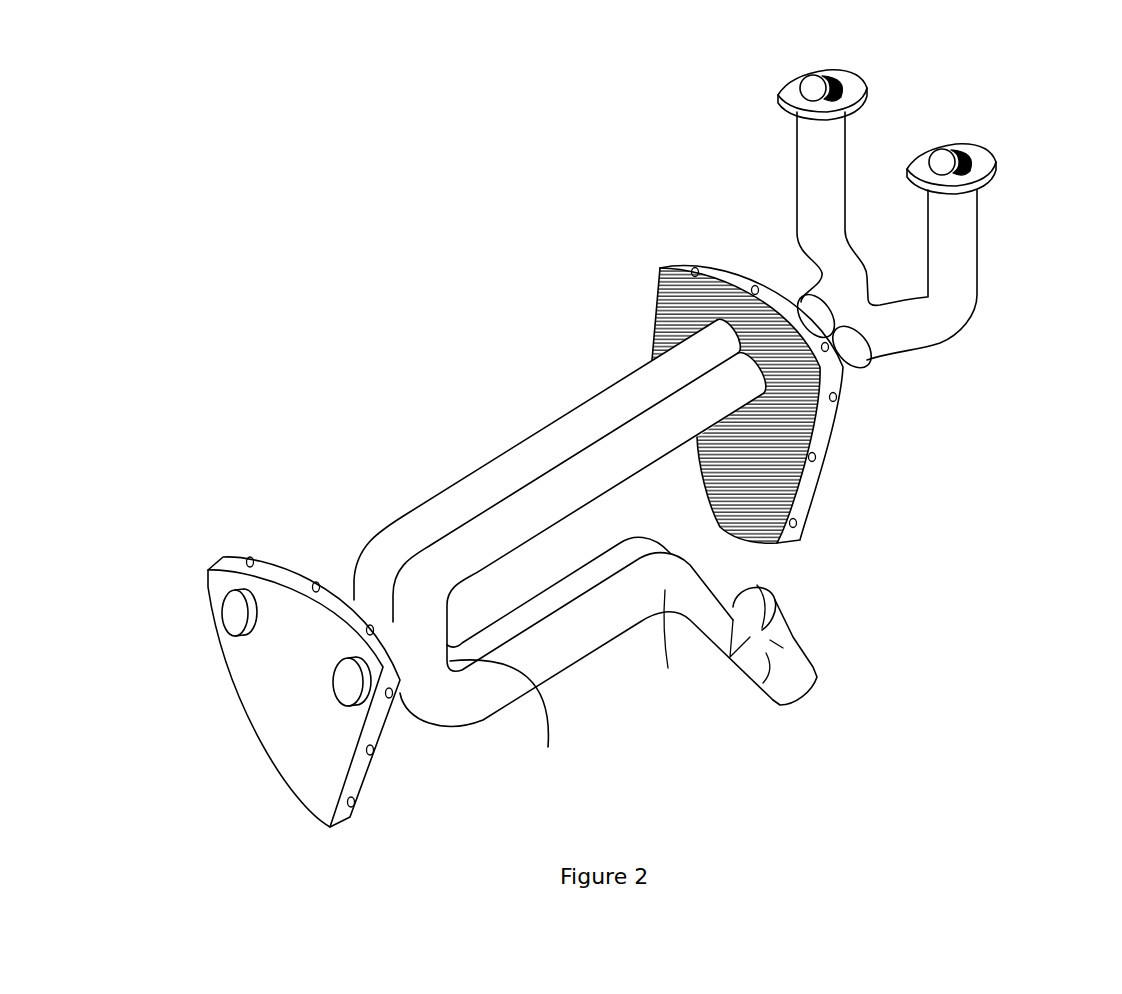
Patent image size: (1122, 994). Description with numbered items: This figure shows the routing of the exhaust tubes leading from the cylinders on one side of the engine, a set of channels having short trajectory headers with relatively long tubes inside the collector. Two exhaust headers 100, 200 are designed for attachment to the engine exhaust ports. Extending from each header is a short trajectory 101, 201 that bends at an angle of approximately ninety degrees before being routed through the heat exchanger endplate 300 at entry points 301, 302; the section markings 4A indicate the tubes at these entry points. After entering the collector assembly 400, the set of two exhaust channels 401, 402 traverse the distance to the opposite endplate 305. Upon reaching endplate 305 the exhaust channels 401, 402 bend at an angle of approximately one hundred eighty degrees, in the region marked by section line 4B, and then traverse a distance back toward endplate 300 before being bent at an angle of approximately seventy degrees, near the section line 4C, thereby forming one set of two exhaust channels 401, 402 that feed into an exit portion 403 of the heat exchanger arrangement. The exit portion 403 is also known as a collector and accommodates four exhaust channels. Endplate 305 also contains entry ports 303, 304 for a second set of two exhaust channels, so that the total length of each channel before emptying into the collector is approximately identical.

The exhaust header 100 is at (820, 72).
The short trajectory 101 is at (797, 180).
The exhaust header 200 is at (973, 153).
The short trajectory 201 is at (977, 263).
The heat exchanger endplate 300 is at (800, 520).
The entry point 301 is at (768, 368).
The entry point 302 is at (658, 294).
The entry port 303 is at (365, 690).
The entry port 304 is at (222, 614).
The endplate 305 is at (258, 718).
The collector assembly 400 is at (505, 385).
The exhaust channel 401 is at (497, 475).
The exhaust channel 402 is at (603, 460).
The exit portion 403 is at (817, 667).
The section line 4A is at (827, 278).
The section line 4B is at (499, 716).
The section line 4C is at (669, 646).